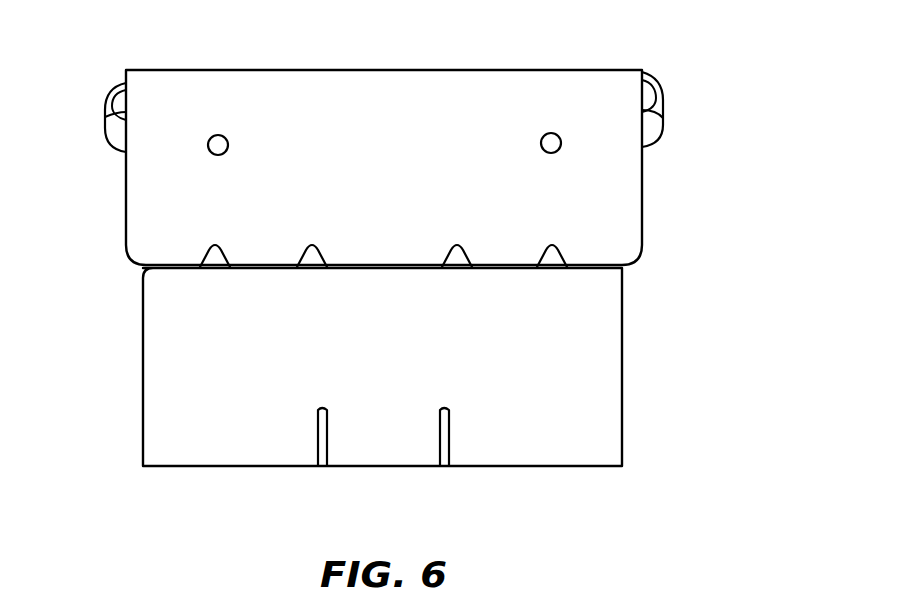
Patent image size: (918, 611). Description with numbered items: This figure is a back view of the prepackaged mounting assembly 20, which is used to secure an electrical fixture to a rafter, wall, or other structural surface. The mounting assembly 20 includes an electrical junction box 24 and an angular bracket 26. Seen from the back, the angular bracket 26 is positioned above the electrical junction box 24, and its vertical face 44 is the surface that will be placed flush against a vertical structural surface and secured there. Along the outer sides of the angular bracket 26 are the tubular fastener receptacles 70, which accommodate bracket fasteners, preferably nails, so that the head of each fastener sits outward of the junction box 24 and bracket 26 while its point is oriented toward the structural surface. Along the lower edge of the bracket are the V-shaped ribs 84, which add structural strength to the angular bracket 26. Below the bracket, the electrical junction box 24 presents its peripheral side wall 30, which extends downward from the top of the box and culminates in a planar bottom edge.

The prepackaged mounting assembly 20 is at (723, 215).
The electrical junction box 24 is at (622, 365).
The angular bracket 26 is at (642, 70).
The peripheral side wall 30 is at (392, 364).
The vertical face 44 is at (597, 111).
The tubular fastener receptacles 70 is at (103, 117).
The V-shaped ribs 84 is at (219, 255).